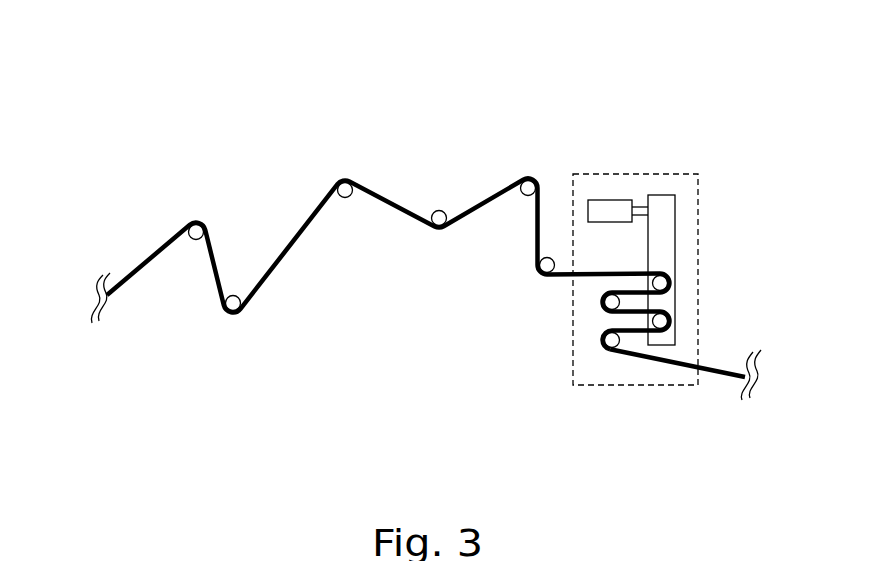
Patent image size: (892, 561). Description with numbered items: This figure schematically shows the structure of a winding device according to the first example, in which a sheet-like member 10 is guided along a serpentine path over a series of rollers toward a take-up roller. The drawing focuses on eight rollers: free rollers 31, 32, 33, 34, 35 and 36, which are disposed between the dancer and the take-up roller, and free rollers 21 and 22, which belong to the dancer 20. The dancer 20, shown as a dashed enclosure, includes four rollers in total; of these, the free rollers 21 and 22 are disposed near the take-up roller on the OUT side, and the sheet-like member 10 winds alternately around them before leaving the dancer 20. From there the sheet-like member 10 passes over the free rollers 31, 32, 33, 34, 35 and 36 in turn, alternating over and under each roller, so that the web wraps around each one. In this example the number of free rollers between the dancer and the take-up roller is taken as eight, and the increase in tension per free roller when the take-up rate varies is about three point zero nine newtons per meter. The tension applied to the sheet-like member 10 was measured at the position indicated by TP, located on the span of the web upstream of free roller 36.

The sheet-like member 10 is at (727, 378).
The dancer 20 is at (652, 173).
The free roller 21 is at (600, 306).
The free roller 22 is at (663, 285).
The free roller 31 is at (533, 268).
The free roller 32 is at (525, 178).
The free roller 33 is at (435, 208).
The free roller 34 is at (348, 197).
The free roller 35 is at (240, 317).
The free roller 36 is at (203, 218).
The tension measurement position TP is at (145, 258).